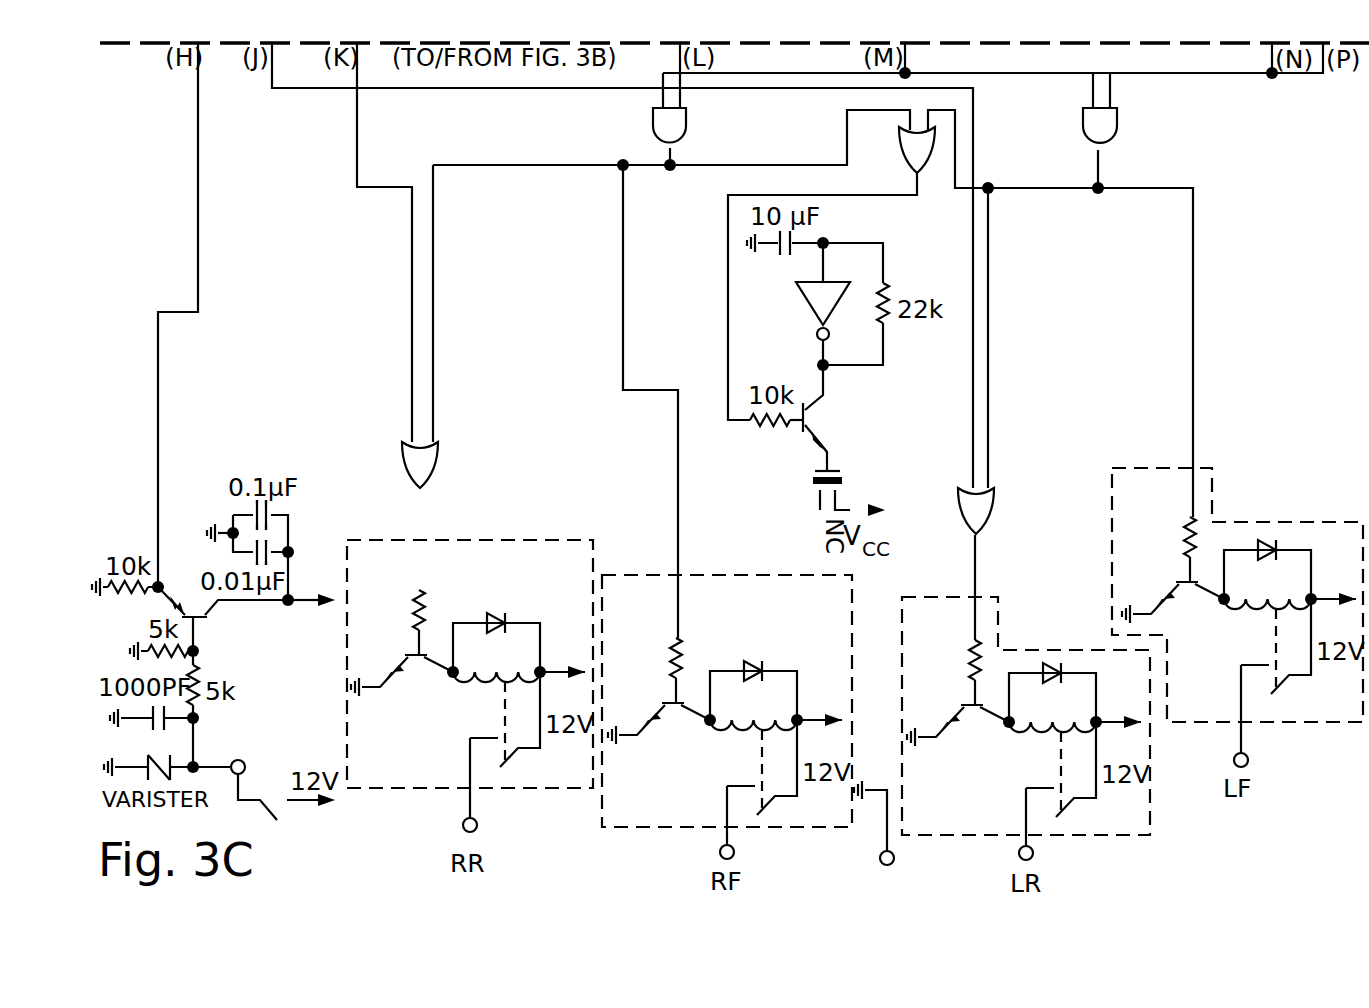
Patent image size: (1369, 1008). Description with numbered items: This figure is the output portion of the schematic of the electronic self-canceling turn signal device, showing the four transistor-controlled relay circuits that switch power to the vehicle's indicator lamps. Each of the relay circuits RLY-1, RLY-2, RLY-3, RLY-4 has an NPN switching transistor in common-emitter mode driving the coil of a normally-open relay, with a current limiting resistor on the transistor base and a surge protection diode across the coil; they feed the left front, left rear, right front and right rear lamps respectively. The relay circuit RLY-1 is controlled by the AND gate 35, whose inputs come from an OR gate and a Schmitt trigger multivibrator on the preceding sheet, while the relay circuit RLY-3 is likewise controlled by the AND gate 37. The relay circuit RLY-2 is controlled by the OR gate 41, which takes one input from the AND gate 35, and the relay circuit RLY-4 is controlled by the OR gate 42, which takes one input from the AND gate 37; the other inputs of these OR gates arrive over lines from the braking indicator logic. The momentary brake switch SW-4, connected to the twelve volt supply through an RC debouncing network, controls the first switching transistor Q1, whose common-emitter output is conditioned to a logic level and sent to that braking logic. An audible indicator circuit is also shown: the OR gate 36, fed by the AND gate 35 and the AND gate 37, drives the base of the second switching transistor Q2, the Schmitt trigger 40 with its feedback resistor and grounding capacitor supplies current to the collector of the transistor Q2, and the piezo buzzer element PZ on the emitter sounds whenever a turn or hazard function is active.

The AND gate 35 is at (1100, 125).
The OR gate 36 is at (917, 150).
The AND gate 37 is at (669, 125).
The Schmitt trigger 40 is at (823, 304).
The OR gate 41 is at (976, 511).
The OR gate 42 is at (420, 465).
The switching transistor Q1 is at (192, 606).
The switching transistor Q2 is at (812, 418).
The piezo buzzer element PZ is at (845, 480).
The momentary switch SW-4 is at (276, 809).
The relay circuit RLY-1 is at (1280, 722).
The relay circuit RLY-2 is at (1150, 803).
The relay circuit RLY-3 is at (836, 827).
The relay circuit RLY-4 is at (576, 788).